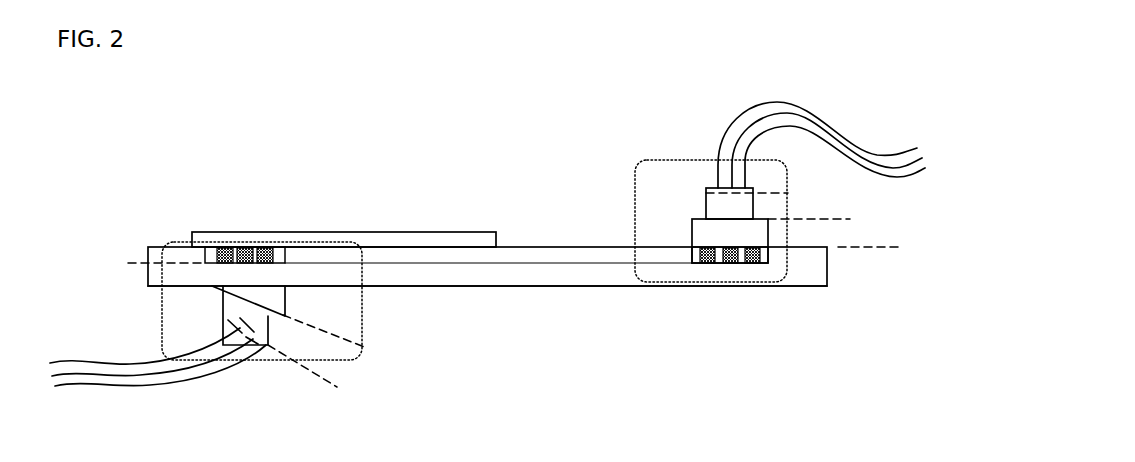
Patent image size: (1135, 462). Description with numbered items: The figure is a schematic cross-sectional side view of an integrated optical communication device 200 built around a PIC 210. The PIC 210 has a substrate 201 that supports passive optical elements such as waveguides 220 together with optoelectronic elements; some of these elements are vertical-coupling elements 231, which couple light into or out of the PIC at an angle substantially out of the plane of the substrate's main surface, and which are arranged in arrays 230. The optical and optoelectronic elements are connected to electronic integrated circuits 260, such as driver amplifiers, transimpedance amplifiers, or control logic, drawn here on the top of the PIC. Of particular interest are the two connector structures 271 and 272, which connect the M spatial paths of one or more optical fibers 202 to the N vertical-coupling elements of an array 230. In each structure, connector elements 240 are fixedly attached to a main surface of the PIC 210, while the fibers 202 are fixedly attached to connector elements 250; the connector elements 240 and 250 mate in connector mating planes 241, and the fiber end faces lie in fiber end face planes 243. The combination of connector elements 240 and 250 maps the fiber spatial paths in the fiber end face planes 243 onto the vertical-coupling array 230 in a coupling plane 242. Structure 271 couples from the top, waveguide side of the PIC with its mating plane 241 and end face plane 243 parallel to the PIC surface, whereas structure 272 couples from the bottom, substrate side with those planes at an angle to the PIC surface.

The integrated optical communication device 200 is at (67, 96).
The substrate 201 is at (565, 277).
The optical fibers 202 is at (95, 368).
The PIC 210 is at (157, 252).
The waveguides 220 is at (580, 258).
The array of vertical-coupling elements 230 is at (285, 248).
The vertical-coupling elements 231 is at (267, 248).
The connector elements 240 is at (280, 299).
The connector mating planes 241 is at (372, 350).
The coupling plane 242 is at (130, 263).
The fiber end face planes 243 is at (337, 383).
The connector elements 250 is at (223, 305).
The electronic integrated circuits 260 is at (417, 240).
The connector structure 271 is at (683, 160).
The connector structure 272 is at (262, 358).